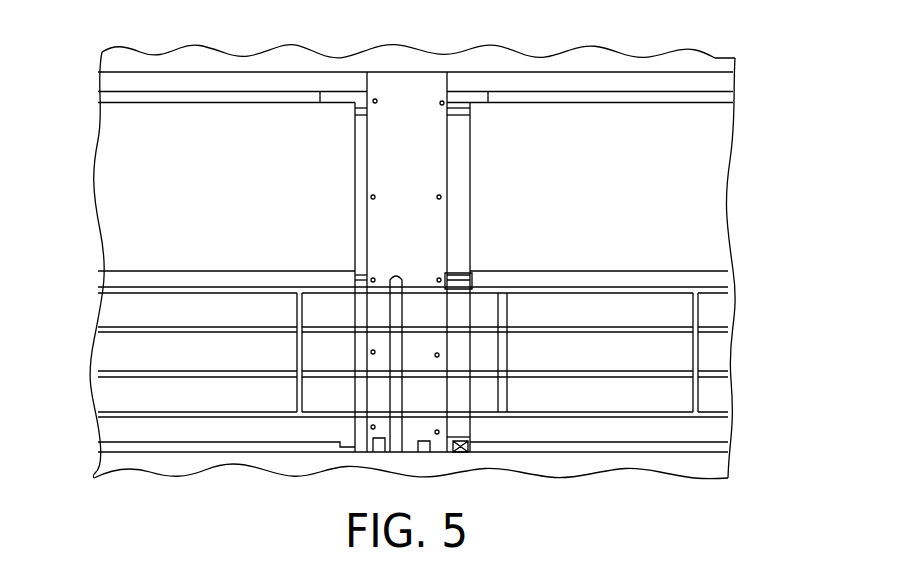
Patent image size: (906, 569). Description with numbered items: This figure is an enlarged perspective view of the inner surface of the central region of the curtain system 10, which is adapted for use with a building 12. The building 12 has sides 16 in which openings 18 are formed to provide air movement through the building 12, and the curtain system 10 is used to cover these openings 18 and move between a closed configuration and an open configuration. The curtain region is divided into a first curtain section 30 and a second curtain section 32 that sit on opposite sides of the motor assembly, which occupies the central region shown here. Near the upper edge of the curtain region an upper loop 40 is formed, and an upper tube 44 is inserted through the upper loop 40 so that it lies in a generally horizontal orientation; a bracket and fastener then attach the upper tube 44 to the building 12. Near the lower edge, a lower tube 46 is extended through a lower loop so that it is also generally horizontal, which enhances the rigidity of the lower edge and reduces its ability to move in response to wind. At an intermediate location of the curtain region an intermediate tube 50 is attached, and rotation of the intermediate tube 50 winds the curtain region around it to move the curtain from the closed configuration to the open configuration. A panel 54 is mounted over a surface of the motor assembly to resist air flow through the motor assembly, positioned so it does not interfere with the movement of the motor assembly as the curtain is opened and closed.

The curtain system 10 is at (163, 180).
The building 12 is at (290, 90).
The sides 16 is at (292, 462).
The openings 18 is at (102, 96).
The first curtain section 30 is at (690, 214).
The second curtain section 32 is at (130, 245).
The upper loop 40 is at (600, 113).
The upper tube 44 is at (456, 105).
The lower tube 46 is at (465, 443).
The intermediate tube 50 is at (453, 272).
The panel 54 is at (400, 92).